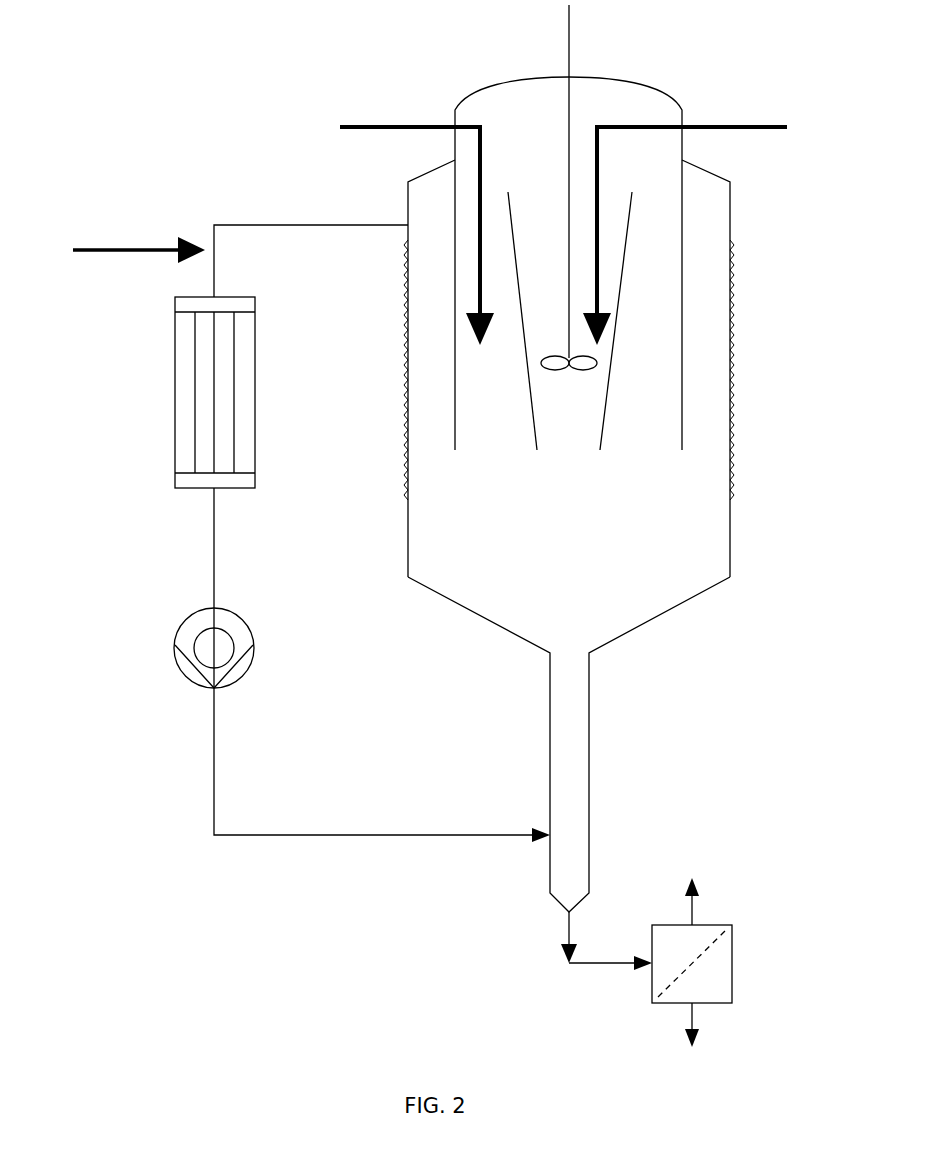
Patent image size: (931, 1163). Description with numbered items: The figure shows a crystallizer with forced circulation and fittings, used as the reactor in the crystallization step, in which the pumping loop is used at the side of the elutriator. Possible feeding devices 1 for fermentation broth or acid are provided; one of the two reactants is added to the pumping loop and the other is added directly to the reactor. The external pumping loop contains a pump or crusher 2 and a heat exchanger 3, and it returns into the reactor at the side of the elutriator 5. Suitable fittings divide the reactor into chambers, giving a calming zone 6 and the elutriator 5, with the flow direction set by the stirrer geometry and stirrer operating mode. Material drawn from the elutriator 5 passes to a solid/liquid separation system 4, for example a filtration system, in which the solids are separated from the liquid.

The feeding devices 1 is at (430, 201).
The pump or crusher 2 is at (169, 648).
The heat exchanger 3 is at (170, 392).
The solid/liquid separation system 4 is at (716, 962).
The elutriator 5 is at (582, 763).
The calming zone 6 is at (713, 369).